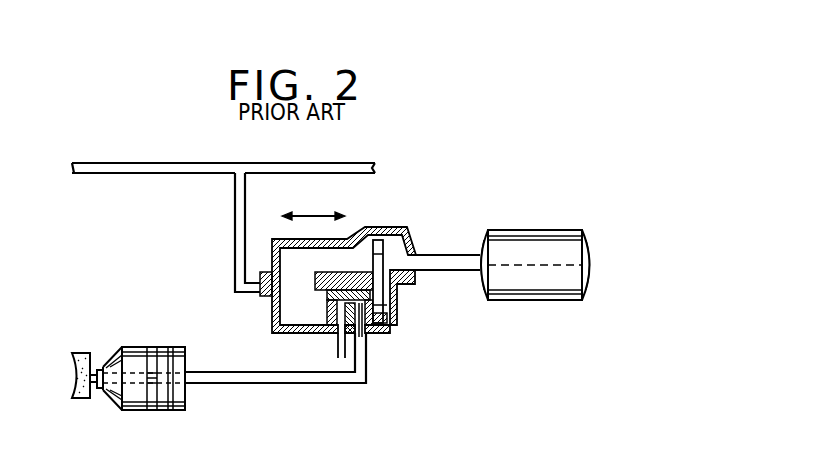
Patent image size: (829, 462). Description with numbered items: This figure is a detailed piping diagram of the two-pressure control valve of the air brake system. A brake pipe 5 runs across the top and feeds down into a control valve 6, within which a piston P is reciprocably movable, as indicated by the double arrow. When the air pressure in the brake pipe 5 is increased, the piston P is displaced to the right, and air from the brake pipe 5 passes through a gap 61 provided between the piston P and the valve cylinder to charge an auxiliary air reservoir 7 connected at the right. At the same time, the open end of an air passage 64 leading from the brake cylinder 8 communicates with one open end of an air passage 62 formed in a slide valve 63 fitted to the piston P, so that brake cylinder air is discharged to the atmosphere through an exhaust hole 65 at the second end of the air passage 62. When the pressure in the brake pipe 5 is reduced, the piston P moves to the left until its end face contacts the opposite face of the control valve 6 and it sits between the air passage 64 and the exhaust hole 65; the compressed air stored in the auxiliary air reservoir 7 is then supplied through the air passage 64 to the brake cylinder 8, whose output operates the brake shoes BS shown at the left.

The brake pipe 5 is at (288, 167).
The control valve 6 is at (398, 295).
The gap 61 is at (372, 239).
The air passage 62 is at (361, 320).
The slide valve 63 is at (380, 308).
The air passage 64 is at (363, 372).
The exhaust hole 65 is at (337, 357).
The auxiliary air reservoir 7 is at (587, 177).
The brake cylinder 8 is at (161, 286).
The piston P is at (384, 258).
The brake shoes BS is at (87, 355).